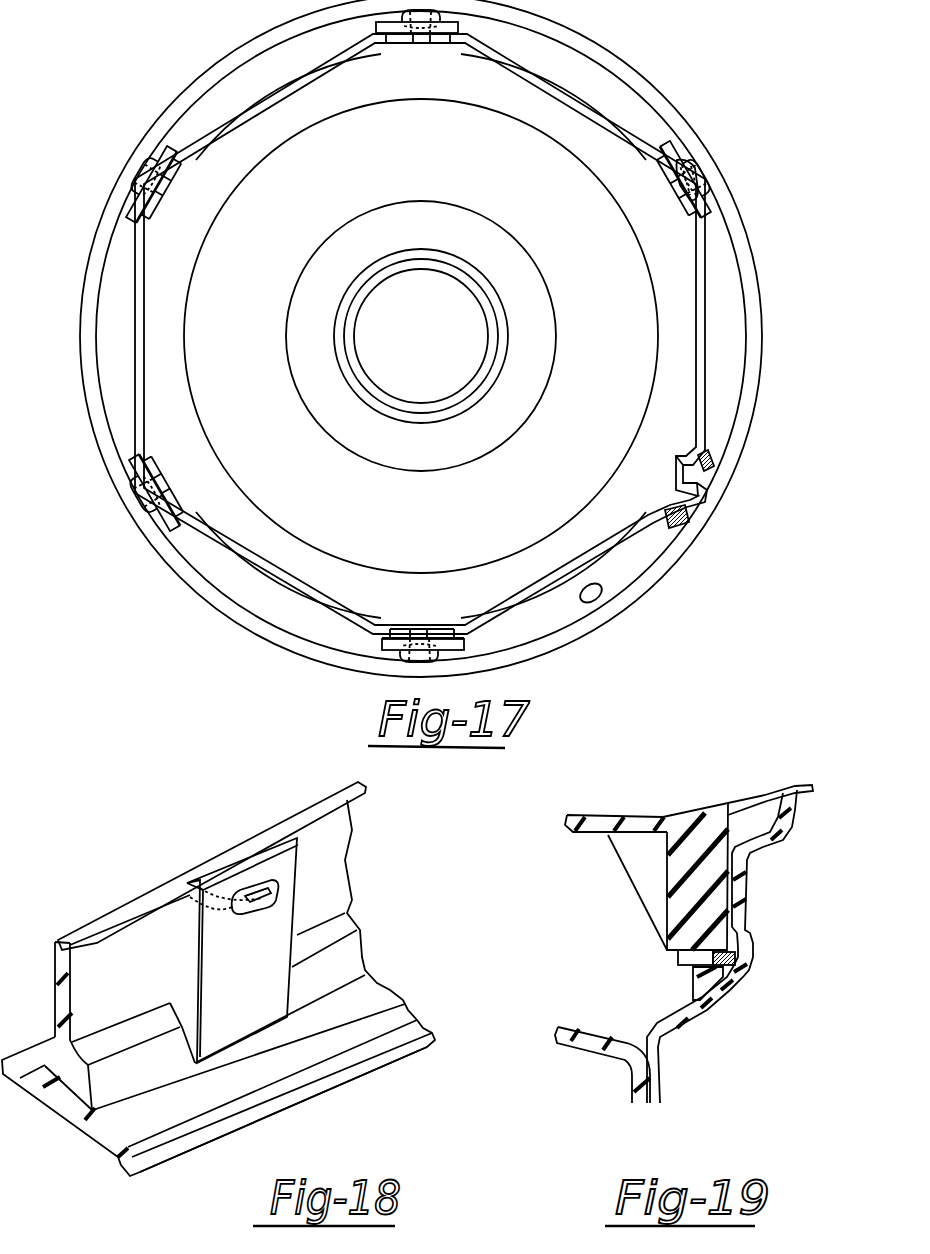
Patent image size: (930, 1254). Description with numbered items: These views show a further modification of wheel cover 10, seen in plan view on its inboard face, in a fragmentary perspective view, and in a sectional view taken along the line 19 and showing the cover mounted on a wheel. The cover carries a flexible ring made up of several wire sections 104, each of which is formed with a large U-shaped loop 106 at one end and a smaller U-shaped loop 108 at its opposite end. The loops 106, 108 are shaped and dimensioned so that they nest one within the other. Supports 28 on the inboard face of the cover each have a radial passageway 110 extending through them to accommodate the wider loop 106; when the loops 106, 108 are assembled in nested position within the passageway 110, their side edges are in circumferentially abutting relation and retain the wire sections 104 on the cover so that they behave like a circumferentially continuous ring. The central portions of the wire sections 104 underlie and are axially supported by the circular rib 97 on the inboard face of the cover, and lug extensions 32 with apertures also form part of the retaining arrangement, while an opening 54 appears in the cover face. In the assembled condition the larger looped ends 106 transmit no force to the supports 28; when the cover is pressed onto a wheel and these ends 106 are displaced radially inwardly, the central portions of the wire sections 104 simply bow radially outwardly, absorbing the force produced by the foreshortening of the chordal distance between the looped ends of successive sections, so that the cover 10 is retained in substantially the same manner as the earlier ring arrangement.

In FIG. 17, the lamp assembly 10 is at (150, 566).
In FIG. 18, the lamp assembly 10 is at (362, 1092).
In FIG. 19, the lamp assembly 10 is at (660, 775).
In FIG. 18, the section line 19 is at (147, 822).
In FIG. 17, the support 28 is at (182, 480).
In FIG. 18, the support 28 is at (263, 1018).
In FIG. 19, the support 28 is at (693, 852).
In FIG. 19, the lug extension 32 is at (703, 985).
In FIG. 17, the aperture 54 is at (603, 598).
In FIG. 17, the circular rib 97 is at (360, 58).
In FIG. 18, the circular rib 97 is at (332, 860).
In FIG. 17, the wire section 104 is at (700, 337).
In FIG. 18, the wire section 104 is at (365, 786).
In FIG. 17, the large U-shaped loop 106 is at (700, 177).
In FIG. 18, the large U-shaped loop 106 is at (258, 915).
In FIG. 19, the large U-shaped loop 106 is at (750, 947).
In FIG. 17, the smaller U-shaped loop 108 is at (712, 456).
In FIG. 19, the smaller U-shaped loop 108 is at (680, 955).
In FIG. 18, the radial passageway 110 is at (265, 888).